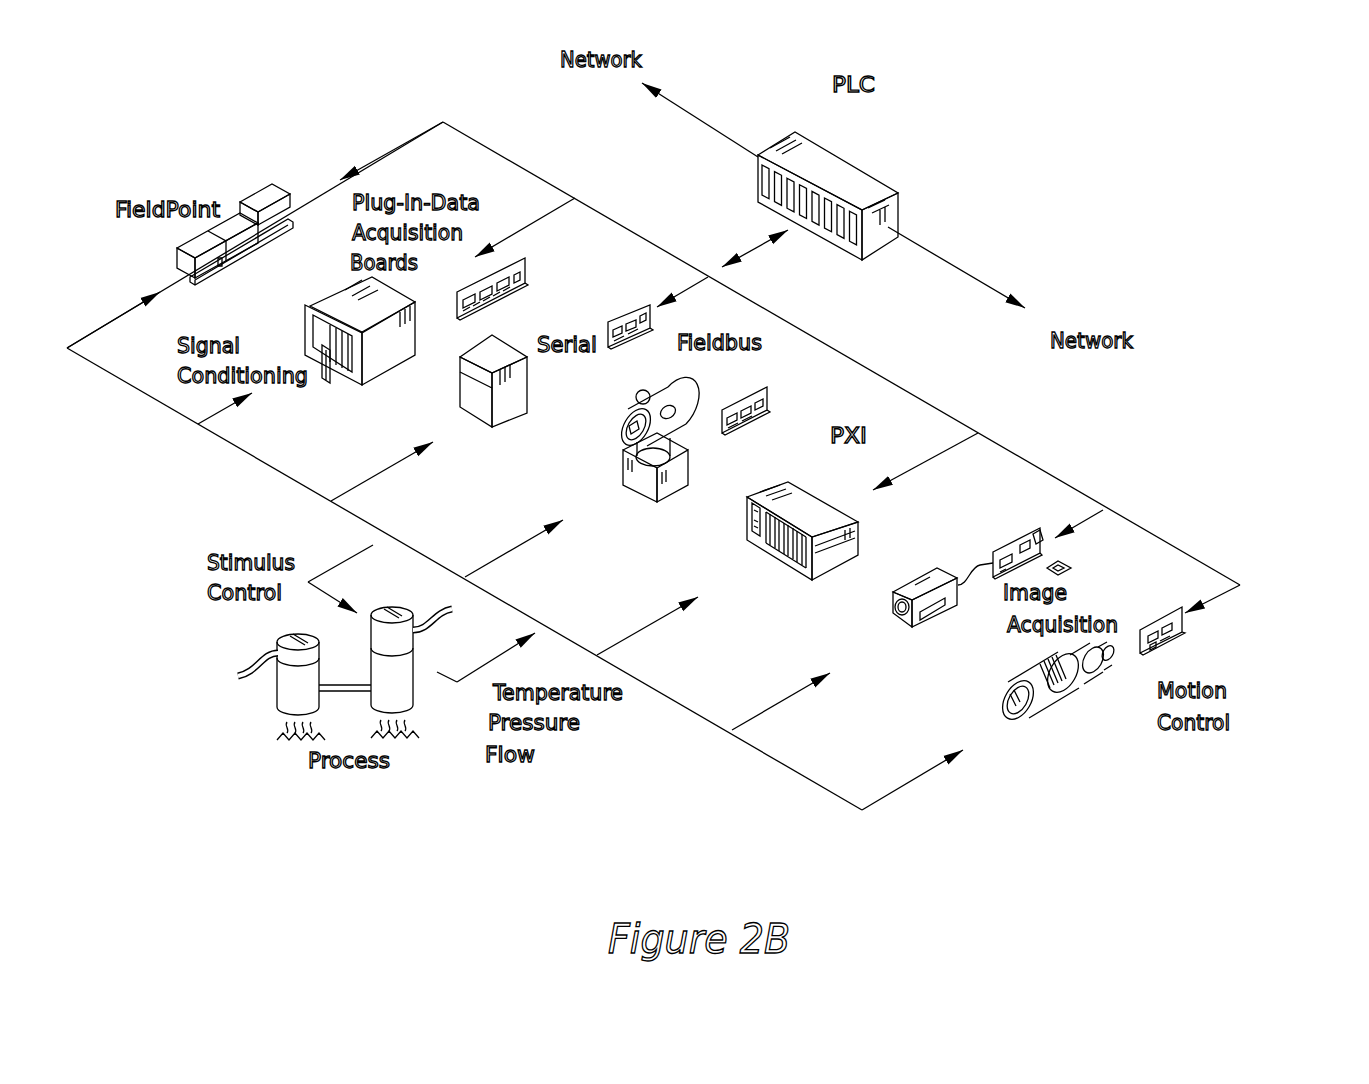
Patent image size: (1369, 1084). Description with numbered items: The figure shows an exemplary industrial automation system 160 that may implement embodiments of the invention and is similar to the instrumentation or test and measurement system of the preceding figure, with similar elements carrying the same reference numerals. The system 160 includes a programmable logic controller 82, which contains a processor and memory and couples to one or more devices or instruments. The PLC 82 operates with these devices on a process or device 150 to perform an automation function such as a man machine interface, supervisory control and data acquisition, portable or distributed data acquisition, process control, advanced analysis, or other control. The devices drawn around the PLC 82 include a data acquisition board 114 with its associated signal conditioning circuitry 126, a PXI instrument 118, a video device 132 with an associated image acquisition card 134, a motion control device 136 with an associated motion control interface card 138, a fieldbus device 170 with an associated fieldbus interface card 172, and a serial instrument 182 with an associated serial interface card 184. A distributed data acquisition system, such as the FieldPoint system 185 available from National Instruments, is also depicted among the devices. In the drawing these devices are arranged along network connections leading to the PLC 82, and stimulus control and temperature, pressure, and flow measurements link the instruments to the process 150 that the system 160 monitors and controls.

The programmable logic controller 82 is at (803, 137).
The data acquisition board 114 is at (518, 262).
The PXI instrument 118 is at (802, 495).
The signal conditioning circuitry 126 is at (330, 363).
The video device 132 is at (895, 617).
The image acquisition card 134 is at (1010, 538).
The motion control device 136 is at (1043, 703).
The motion control interface card 138 is at (1170, 640).
The process or device 150 is at (250, 657).
The industrial automation system 160 is at (1217, 212).
The fieldbus device 170 is at (630, 477).
The fieldbus interface card 172 is at (740, 395).
The serial instrument 182 is at (465, 400).
The serial interface card 184 is at (622, 310).
The FieldPoint distributed I/O system 185 is at (250, 195).